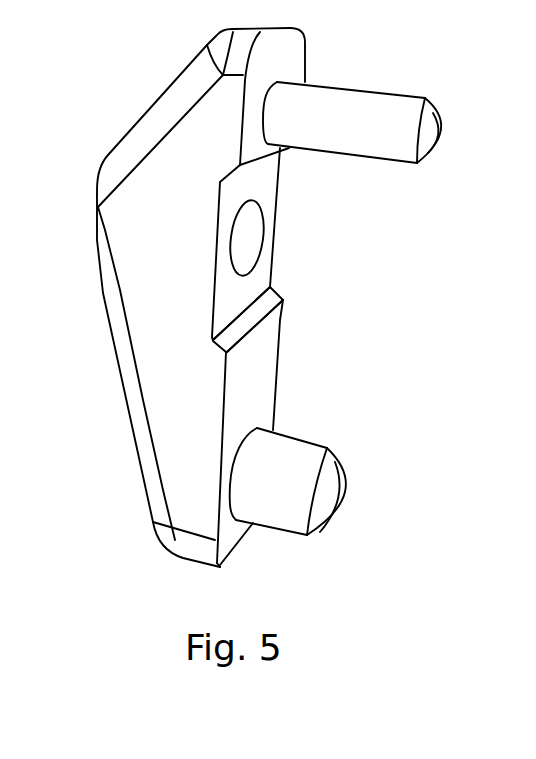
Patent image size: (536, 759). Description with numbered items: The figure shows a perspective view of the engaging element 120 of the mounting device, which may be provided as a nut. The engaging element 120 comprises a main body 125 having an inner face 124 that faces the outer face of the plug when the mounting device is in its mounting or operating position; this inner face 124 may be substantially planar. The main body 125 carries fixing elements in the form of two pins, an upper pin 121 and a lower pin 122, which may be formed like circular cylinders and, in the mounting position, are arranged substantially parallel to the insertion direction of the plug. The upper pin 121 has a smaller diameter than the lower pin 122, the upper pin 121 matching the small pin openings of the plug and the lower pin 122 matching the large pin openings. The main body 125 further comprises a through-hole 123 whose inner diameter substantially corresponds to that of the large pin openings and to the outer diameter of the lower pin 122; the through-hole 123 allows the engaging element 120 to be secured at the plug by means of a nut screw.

The engaging element 120 is at (235, 294).
The upper pin 121 is at (355, 100).
The lower pin 122 is at (292, 458).
The through-hole 123 is at (245, 240).
The inner face 124 is at (265, 343).
The main body 125 is at (150, 353).